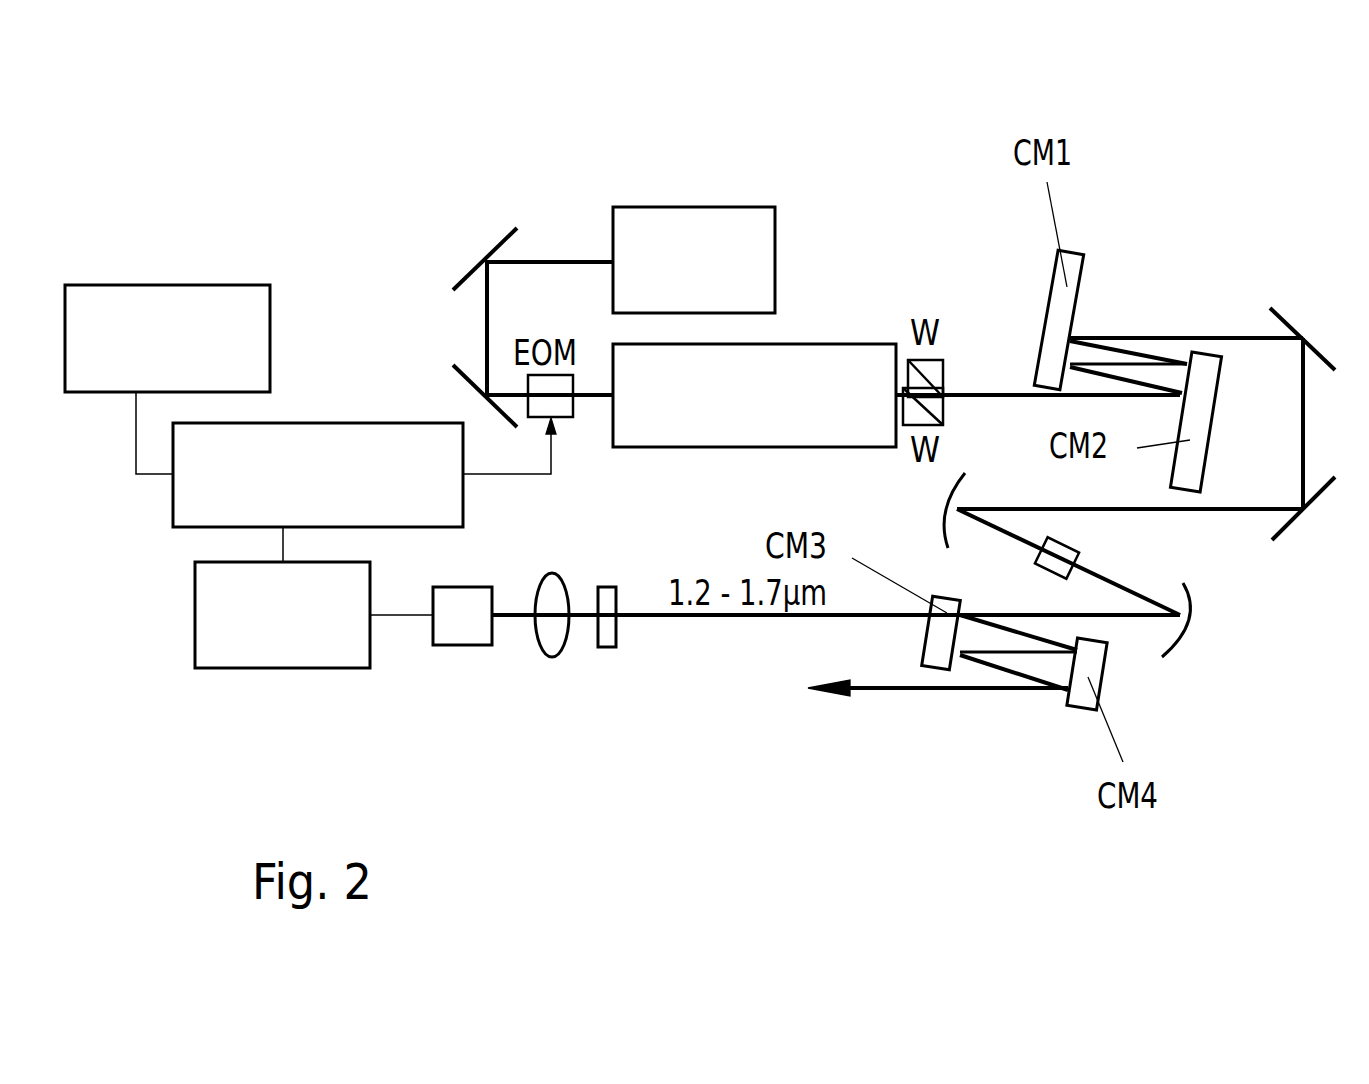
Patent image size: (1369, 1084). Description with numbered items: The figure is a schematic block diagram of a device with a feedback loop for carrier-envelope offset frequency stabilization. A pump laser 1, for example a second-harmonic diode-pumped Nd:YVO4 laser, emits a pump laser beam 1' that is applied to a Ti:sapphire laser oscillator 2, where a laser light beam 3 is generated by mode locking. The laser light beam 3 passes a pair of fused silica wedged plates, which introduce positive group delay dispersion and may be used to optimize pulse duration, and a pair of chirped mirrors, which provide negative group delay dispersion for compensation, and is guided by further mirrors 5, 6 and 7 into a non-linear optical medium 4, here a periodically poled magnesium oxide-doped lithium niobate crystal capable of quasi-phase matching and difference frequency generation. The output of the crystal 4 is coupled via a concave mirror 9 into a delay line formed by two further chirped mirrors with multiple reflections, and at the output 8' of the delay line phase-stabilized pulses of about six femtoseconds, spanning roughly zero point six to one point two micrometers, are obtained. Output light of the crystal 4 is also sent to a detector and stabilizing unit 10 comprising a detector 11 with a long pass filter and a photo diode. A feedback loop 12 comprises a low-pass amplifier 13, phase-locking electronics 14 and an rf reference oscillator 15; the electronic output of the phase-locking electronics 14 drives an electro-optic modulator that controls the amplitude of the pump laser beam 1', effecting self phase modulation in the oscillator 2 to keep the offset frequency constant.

The pump laser 1 is at (694, 201).
The pump laser beam 1' is at (450, 327).
The Ti:sapphire laser oscillator 2 is at (850, 343).
The laser light beam 3 is at (997, 393).
The non-linear optical medium 4 is at (1035, 565).
The mirror 5 is at (1288, 322).
The mirror 6 is at (1287, 530).
The mirror 7 is at (947, 532).
The output of the delay line 8' is at (930, 735).
The concave mirror 9 is at (1175, 642).
The detector and stabilizing unit 10 is at (318, 258).
The detector 11 is at (488, 706).
The feedback loop 12 is at (168, 668).
The low-pass amplifier 13 is at (323, 668).
The phase-locking electronics 14 is at (168, 516).
The rf reference oscillator 15 is at (168, 282).